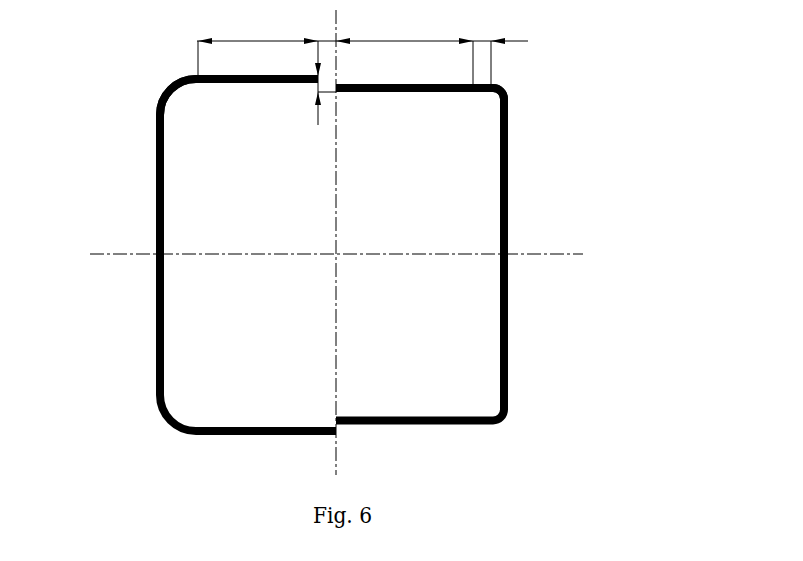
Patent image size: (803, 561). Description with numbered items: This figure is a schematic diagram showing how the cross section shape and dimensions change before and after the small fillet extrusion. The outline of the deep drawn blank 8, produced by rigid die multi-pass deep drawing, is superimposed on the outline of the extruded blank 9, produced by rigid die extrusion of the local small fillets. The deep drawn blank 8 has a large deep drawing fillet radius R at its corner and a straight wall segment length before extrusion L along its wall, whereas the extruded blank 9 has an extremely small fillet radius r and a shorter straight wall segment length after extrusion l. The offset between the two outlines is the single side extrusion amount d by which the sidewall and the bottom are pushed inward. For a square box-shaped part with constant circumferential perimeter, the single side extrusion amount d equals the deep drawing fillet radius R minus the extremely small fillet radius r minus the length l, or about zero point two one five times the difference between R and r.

The deep drawn blank 8 is at (168, 235).
The extruded blank 9 is at (513, 218).
The straight wall segment length before extrusion L is at (335, 48).
The straight wall segment length after extrusion l is at (500, 47).
The single side extrusion amount d is at (318, 125).
The deep drawing fillet radius R is at (165, 83).
The extremely small fillet radius r is at (509, 85).